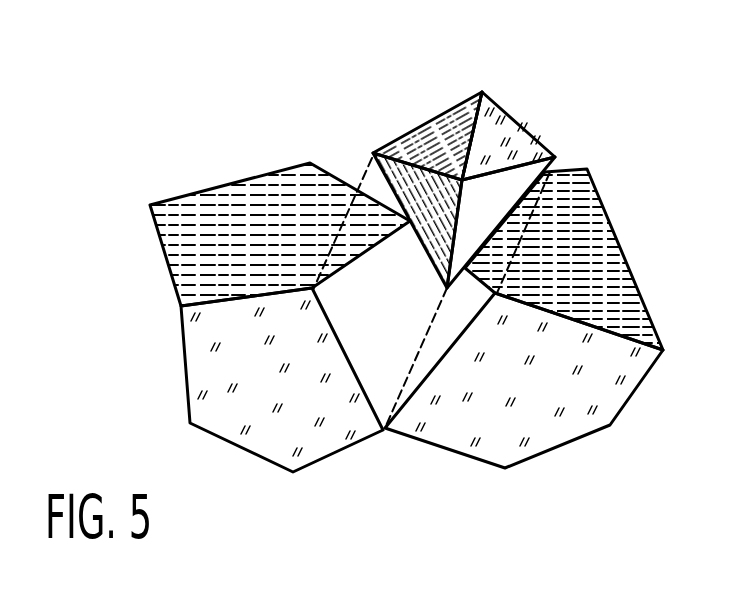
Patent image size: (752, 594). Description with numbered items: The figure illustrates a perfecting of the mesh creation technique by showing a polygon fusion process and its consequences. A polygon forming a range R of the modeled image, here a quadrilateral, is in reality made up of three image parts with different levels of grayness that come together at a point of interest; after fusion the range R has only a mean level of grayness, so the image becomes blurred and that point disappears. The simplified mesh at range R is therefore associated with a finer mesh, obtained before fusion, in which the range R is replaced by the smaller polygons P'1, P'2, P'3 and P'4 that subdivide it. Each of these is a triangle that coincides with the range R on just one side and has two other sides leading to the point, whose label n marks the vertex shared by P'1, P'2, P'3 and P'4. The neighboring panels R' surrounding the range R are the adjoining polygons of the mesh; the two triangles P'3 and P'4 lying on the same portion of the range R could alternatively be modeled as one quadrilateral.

The pyramid apex normal / edge n is at (457, 170).
The polygon P'1 is at (513, 105).
The polygon P'2 is at (554, 198).
The polygon P'3 is at (359, 197).
The polygon P'4 is at (406, 126).
The range R is at (411, 396).
The folded panel regions R' is at (395, 318).